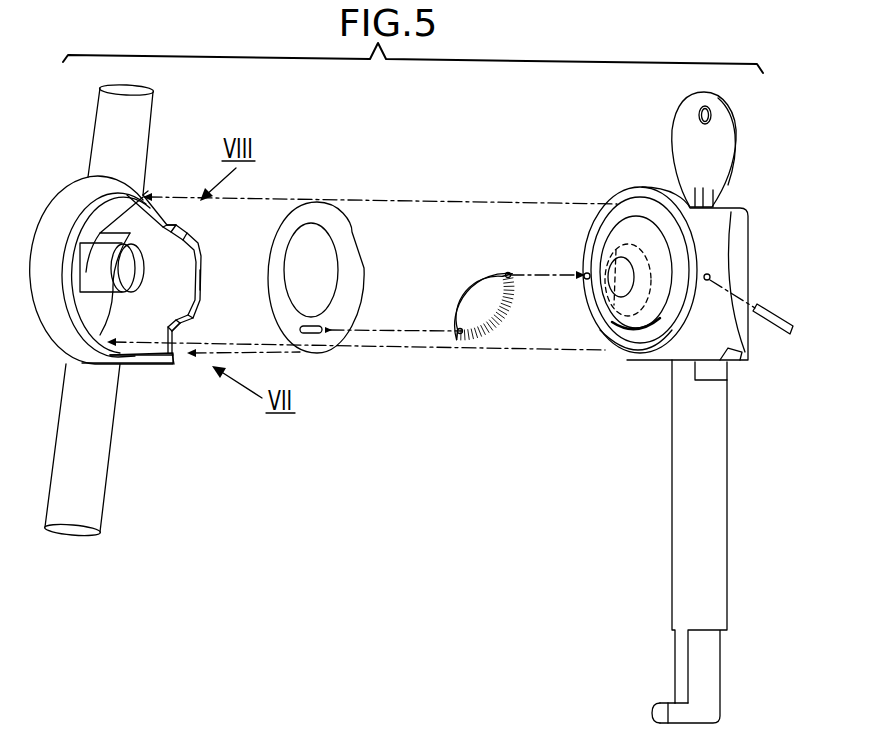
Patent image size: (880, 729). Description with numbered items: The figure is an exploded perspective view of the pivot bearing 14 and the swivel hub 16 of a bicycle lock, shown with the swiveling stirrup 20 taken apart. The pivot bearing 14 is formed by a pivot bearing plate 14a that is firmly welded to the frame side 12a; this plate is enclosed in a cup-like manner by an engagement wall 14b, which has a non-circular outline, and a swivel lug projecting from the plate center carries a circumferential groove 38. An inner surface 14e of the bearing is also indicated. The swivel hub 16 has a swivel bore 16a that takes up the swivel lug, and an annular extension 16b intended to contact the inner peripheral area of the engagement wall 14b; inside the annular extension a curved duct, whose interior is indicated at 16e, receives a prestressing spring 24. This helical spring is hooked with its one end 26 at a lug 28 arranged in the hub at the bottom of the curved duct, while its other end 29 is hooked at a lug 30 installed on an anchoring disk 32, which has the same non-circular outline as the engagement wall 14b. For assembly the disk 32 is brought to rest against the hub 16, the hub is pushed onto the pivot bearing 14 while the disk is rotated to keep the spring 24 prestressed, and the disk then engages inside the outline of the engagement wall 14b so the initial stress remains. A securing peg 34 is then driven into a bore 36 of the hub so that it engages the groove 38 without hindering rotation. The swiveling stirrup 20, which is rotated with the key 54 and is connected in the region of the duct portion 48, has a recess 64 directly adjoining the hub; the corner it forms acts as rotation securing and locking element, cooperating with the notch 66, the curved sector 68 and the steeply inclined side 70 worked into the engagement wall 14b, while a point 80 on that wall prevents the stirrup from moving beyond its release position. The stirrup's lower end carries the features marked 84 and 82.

The frame side 12a is at (150, 102).
The pivot bearing 14 is at (47, 352).
The pivot bearing plate 14a is at (107, 318).
The engagement wall 14b is at (68, 188).
The inner surface of collar 14e is at (87, 267).
The circumferential groove 38 is at (145, 196).
The steeply inclined side 70 is at (196, 236).
The curved sector 68 is at (201, 276).
The notch 66 is at (180, 334).
The point 80 is at (160, 366).
The anchoring disk 32 is at (355, 270).
The lug 30 is at (311, 334).
The prestressing spring 24 is at (497, 325).
The other end of helical spring 29 is at (458, 330).
The spring end 26 is at (507, 274).
The lug 28 is at (582, 275).
The swivel hub 16 is at (735, 208).
The swivel bore 16a is at (614, 262).
The inner bore 16e is at (612, 330).
The annular extension 16b is at (668, 342).
The key 54 is at (680, 140).
The bore 36 is at (707, 282).
The securing peg 34 is at (766, 304).
The duct portion 48 is at (742, 356).
The recess 64 is at (722, 372).
The swiveling stirrup 20 is at (685, 508).
The slot 84 is at (700, 660).
The foot 82 is at (656, 713).